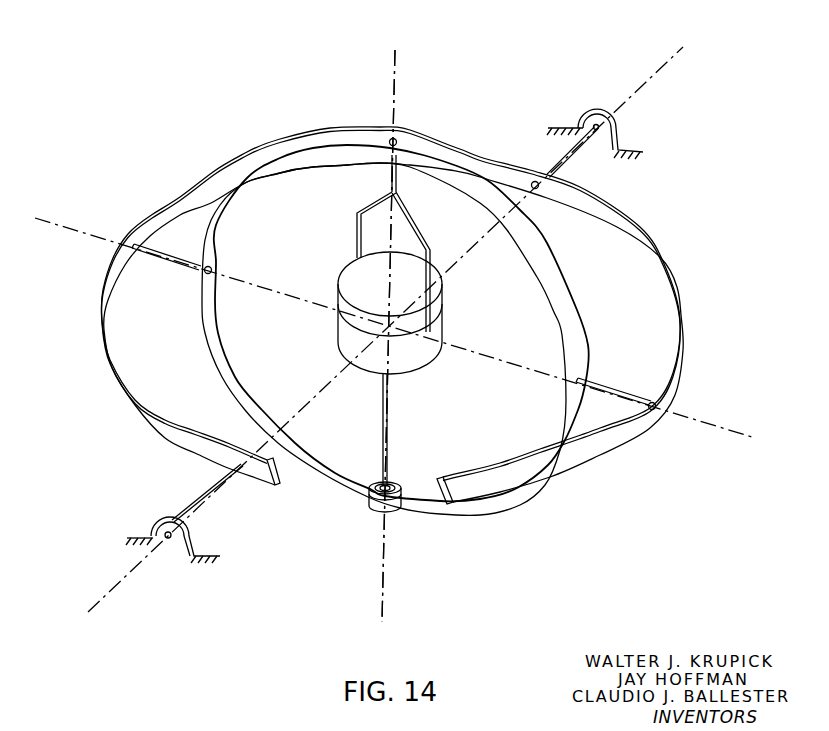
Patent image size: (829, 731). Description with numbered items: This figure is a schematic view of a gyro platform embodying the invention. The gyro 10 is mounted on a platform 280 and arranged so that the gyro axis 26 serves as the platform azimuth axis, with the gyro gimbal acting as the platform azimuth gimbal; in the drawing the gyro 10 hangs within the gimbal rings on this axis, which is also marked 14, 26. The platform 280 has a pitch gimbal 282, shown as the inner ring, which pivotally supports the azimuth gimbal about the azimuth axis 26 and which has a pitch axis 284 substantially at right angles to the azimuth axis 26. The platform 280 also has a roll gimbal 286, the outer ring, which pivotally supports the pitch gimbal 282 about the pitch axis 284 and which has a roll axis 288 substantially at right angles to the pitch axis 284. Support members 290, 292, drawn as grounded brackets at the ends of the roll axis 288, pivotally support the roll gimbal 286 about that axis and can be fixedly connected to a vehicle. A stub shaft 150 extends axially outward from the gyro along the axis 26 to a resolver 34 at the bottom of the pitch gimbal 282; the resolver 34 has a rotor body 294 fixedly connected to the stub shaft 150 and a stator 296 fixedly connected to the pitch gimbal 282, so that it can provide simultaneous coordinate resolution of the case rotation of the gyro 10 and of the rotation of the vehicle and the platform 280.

The gyro 10 is at (340, 308).
The spin axis 14 is at (395, 63).
The gyro axis 26 is at (388, 336).
The resolver 34 is at (396, 500).
The stub shaft 150 is at (388, 418).
The platform 280 is at (574, 504).
The pitch gimbal 282 is at (552, 274).
The pitch axis 284 is at (730, 419).
The roll gimbal 286 is at (618, 228).
The roll axis 288 is at (674, 54).
The support member 290 is at (598, 141).
The support member 292 is at (173, 553).
The rotor body 294 is at (392, 484).
The stator 296 is at (388, 510).